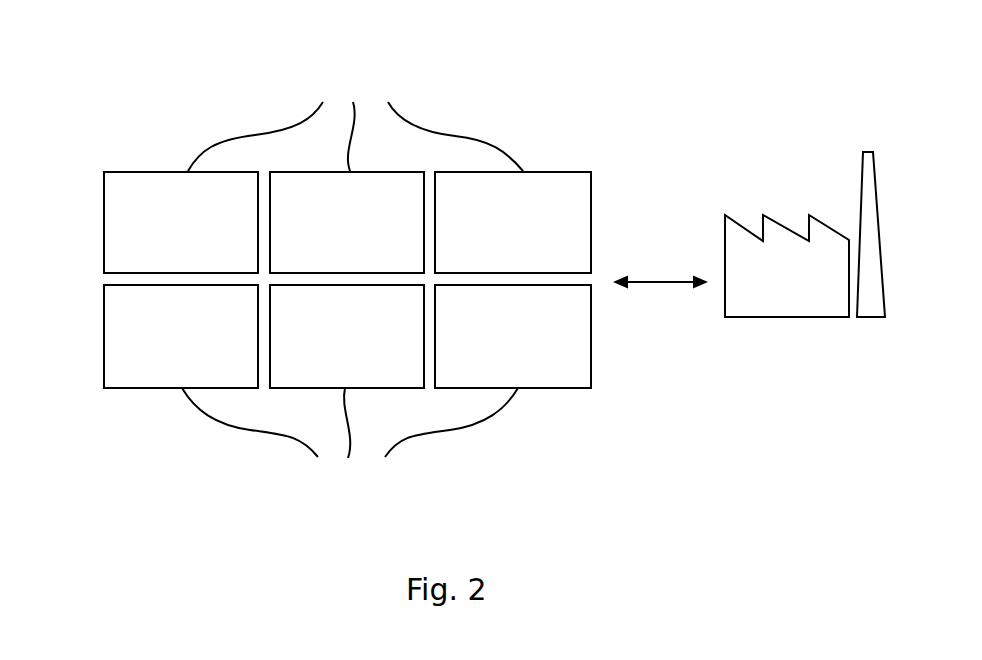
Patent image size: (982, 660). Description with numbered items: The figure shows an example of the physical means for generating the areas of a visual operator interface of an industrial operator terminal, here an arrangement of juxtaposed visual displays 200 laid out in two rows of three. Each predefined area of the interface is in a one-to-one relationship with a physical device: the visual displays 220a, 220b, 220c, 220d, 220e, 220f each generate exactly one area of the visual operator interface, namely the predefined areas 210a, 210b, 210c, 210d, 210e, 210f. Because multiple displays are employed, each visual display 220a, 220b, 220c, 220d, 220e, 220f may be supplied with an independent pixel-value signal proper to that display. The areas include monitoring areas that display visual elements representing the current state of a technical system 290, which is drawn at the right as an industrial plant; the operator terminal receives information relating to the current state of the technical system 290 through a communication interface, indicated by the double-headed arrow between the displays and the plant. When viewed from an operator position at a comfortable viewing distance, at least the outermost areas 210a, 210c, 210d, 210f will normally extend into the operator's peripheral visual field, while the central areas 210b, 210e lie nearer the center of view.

The visual displays 200 is at (89, 128).
The outermost area 210a is at (150, 236).
The predefined area 210b is at (315, 236).
The outermost area 210c is at (481, 236).
The outermost area 210d is at (213, 350).
The predefined area 210e is at (316, 350).
The outermost area 210f is at (485, 350).
The visual display 220a is at (300, 119).
The visual display 220b is at (351, 136).
The visual display 220c is at (455, 136).
The visual display 220d is at (294, 440).
The visual display 220e is at (347, 423).
The visual display 220f is at (451, 422).
The technical system 290 is at (793, 317).